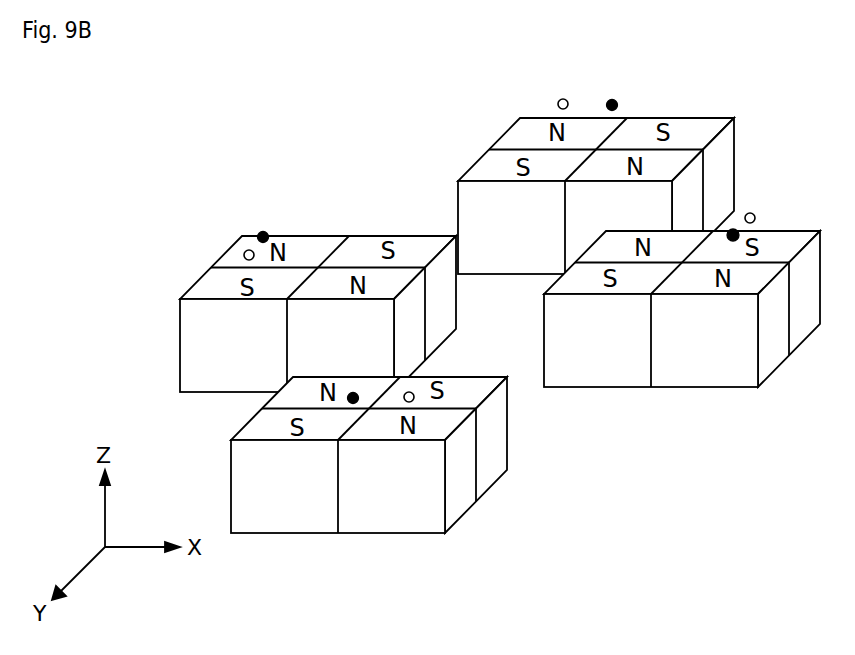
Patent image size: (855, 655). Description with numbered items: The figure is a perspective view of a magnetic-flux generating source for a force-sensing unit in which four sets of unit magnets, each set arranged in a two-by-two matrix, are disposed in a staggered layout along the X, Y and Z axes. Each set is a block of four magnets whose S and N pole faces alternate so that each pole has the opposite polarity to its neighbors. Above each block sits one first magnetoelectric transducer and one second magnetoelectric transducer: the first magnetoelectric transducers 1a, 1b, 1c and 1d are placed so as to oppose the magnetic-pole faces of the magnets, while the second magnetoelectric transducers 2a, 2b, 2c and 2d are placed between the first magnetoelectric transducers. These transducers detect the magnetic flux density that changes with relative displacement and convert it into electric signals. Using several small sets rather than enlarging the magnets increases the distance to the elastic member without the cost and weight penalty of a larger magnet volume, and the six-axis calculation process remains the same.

The first magnetoelectric transducer 1a is at (557, 103).
The first magnetoelectric transducer 1b is at (755, 214).
The first magnetoelectric transducer 1c is at (415, 400).
The first magnetoelectric transducer 1d is at (243, 255).
The second magnetoelectric transducer 2a is at (257, 238).
The second magnetoelectric transducer 2b is at (608, 101).
The second magnetoelectric transducer 2c is at (740, 234).
The second magnetoelectric transducer 2d is at (347, 401).